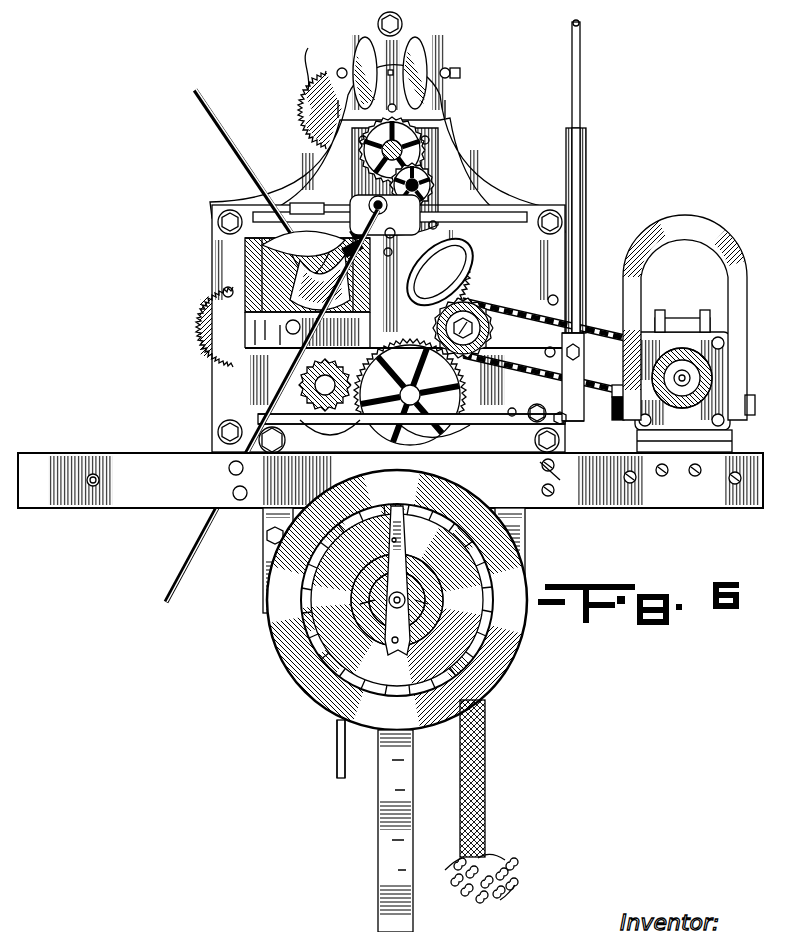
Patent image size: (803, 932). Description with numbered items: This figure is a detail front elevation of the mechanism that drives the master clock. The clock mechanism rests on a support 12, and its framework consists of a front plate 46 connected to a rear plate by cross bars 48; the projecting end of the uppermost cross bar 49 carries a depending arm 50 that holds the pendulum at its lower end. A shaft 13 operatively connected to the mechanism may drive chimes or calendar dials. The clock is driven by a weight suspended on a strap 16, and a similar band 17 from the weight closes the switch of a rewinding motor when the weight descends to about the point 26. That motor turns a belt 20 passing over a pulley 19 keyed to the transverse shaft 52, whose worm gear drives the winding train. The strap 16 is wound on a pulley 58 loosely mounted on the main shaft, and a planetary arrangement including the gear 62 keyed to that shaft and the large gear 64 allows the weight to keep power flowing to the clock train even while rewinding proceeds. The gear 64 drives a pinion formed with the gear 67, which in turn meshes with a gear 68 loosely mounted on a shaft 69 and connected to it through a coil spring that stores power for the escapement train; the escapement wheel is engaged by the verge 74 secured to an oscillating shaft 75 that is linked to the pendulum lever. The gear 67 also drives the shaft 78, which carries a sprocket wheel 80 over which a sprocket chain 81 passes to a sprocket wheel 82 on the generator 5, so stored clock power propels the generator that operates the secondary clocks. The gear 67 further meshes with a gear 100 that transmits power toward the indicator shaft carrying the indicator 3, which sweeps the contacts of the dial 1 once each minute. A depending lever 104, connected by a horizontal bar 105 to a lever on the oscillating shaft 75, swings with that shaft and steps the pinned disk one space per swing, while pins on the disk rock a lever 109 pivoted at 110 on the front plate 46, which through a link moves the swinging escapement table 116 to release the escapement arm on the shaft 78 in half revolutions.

The dial 1 is at (305, 680).
The indicator 3 is at (292, 620).
The generator 5 is at (680, 338).
The support 12 is at (150, 470).
The shaft 13 is at (182, 586).
The strap 16 is at (336, 762).
The band 17 is at (210, 108).
The pulley 19 is at (587, 160).
The belt 20 is at (582, 75).
The point 26 is at (488, 758).
The front plate 46 is at (254, 421).
The cross bars 48 is at (228, 210).
The uppermost cross bar 49 is at (387, 122).
The depending arm 50 is at (385, 840).
The shaft 52 is at (470, 212).
The pulley 58 is at (210, 327).
The gear 62 is at (240, 270).
The large gear 64 is at (200, 312).
The gear 67 is at (470, 258).
The gear 68 is at (307, 55).
The shaft 69 is at (345, 112).
The verge 74 is at (460, 73).
The oscillating shaft 75 is at (392, 72).
The shaft 78 is at (478, 300).
The sprocket wheel 80 is at (477, 338).
The sprocket chain 81 is at (598, 320).
The sprocket wheel 82 is at (665, 368).
The gear 100 is at (460, 398).
The depending lever 104 is at (275, 370).
The horizontal bar 105 is at (307, 210).
The lever 109 is at (520, 518).
The pivot 110 is at (560, 480).
The escapement table 116 is at (577, 390).